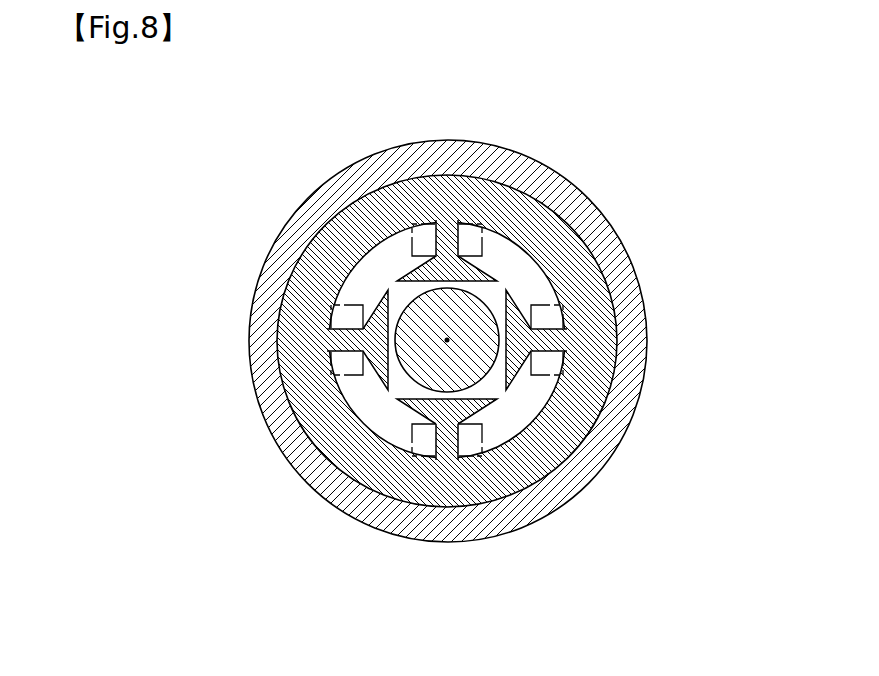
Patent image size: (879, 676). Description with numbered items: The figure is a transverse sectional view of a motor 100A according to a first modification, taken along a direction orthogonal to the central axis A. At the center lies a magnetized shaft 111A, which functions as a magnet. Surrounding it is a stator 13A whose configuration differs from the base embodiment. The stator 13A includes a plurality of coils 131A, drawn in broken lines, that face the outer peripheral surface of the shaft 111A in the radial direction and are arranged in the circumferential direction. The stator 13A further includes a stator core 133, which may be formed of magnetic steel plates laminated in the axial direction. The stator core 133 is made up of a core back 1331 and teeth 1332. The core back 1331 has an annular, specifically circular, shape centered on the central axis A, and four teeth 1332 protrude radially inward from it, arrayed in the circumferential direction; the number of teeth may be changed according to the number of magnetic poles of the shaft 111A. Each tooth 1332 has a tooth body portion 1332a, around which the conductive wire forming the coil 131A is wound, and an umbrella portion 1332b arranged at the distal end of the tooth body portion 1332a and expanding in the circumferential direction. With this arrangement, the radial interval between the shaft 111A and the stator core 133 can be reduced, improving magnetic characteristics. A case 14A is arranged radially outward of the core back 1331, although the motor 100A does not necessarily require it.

The motor 100A is at (626, 135).
The case 14A is at (267, 267).
The stator 13A is at (582, 252).
The stator core 133 is at (617, 331).
The core back 1331 is at (597, 391).
The tooth 1332 is at (476, 444).
The tooth body portion 1332a is at (487, 497).
The umbrella portion 1332b is at (422, 410).
The coil 131A is at (412, 238).
The shaft 111A is at (447, 340).
The central axis A is at (447, 340).